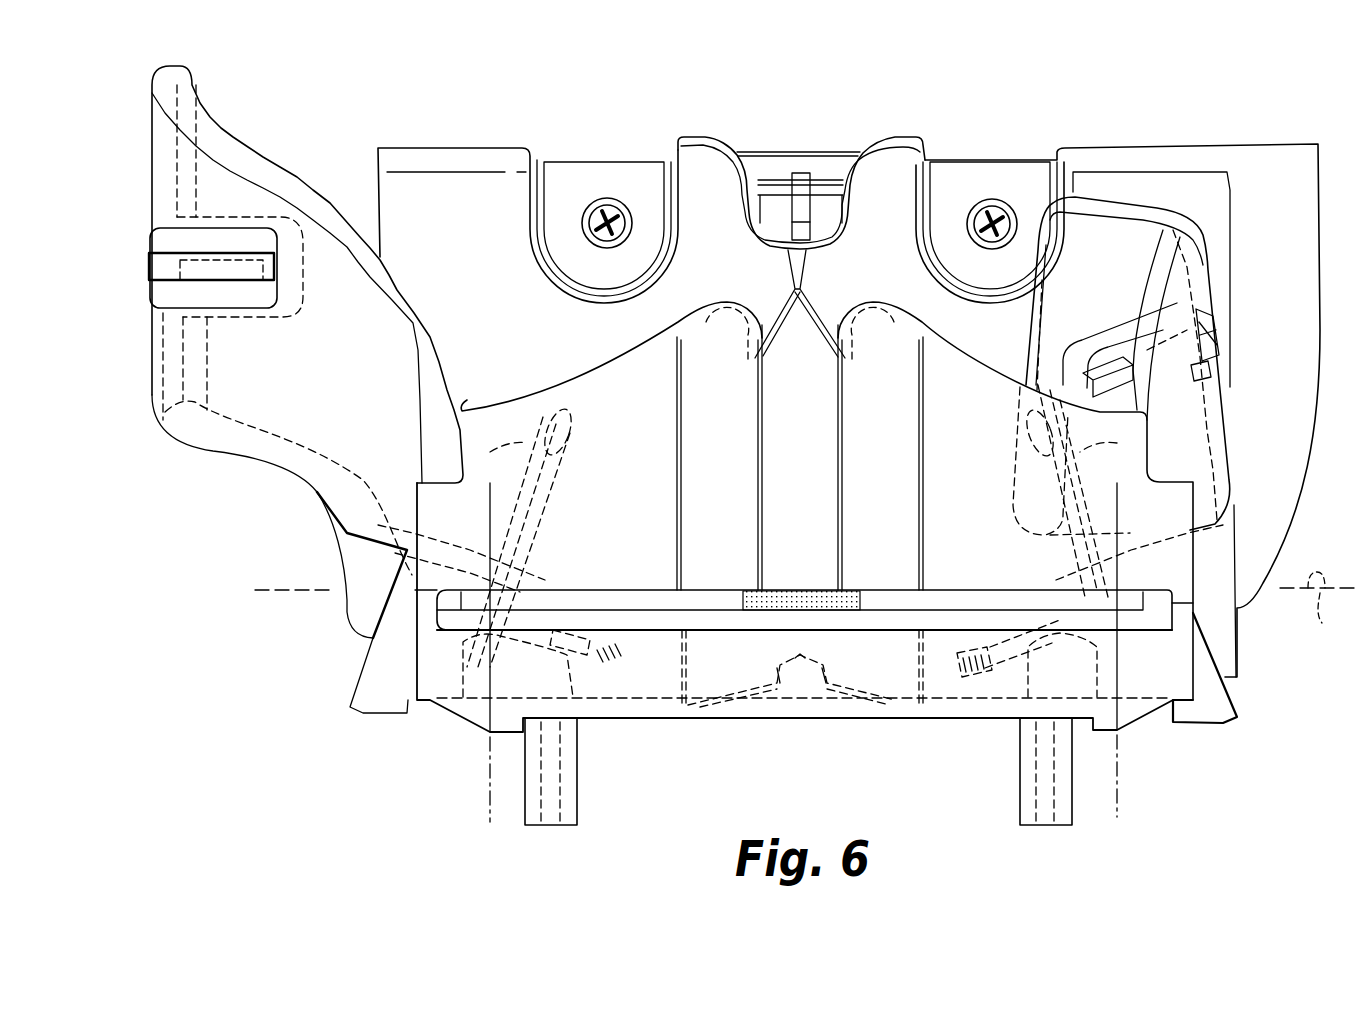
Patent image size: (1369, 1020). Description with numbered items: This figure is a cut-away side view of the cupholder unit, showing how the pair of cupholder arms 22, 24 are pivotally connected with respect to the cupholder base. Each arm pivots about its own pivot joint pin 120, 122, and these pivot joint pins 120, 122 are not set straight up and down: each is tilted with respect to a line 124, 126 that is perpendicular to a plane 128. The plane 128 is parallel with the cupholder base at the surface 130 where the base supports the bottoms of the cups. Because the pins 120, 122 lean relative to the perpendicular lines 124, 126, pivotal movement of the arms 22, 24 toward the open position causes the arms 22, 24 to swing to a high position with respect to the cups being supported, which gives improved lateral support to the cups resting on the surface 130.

The cupholder arm 22 is at (250, 153).
The cupholder arm 24 is at (1123, 203).
The pivot joint pin 120 is at (562, 491).
The pivot joint pin 122 is at (1013, 508).
The line 124 is at (490, 762).
The line 126 is at (1120, 755).
The plane 128 is at (807, 614).
The surface 130 is at (968, 583).